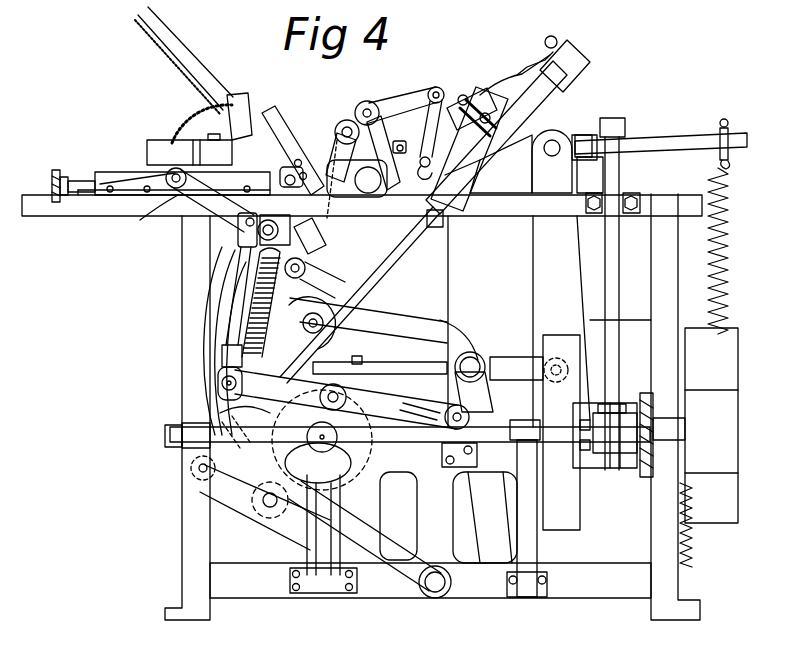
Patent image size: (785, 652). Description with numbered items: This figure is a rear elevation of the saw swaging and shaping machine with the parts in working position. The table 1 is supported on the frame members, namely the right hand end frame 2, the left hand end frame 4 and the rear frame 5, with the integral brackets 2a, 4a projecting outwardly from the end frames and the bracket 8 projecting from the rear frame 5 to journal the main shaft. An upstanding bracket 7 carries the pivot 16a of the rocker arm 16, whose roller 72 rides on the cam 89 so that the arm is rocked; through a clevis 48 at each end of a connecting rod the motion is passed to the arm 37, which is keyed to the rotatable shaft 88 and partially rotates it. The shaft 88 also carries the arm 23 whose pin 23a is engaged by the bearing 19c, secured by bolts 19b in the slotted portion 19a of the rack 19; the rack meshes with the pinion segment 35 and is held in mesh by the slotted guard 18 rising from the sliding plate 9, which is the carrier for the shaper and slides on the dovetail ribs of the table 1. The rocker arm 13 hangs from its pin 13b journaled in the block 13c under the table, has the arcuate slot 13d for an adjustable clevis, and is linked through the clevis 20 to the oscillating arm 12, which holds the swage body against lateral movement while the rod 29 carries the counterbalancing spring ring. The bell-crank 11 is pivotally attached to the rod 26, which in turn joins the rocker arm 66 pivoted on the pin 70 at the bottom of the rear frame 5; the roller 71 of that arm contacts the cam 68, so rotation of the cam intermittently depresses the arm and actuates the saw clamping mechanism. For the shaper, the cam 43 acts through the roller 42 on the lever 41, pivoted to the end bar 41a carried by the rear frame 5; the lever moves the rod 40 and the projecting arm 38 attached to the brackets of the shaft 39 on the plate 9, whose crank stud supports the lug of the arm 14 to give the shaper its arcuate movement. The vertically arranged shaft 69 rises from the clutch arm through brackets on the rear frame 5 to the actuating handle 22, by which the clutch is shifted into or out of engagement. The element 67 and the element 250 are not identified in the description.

The table 1 is at (686, 199).
The right hand end frame 2 is at (187, 378).
The integral bracket 2a is at (192, 512).
The left hand end frame 4 is at (668, 254).
The integral bracket 4a is at (662, 518).
The rear frame 5 is at (463, 92).
The upstanding bracket 7 is at (430, 535).
The bracket 8 is at (494, 508).
The sliding plate 9 is at (108, 178).
The bell-crank 11 is at (530, 110).
The oscillating arm 12 is at (535, 266).
The rocker arm 13 is at (254, 340).
The pin 13b is at (290, 215).
The block 13c is at (240, 250).
The arcuate slot 13d is at (247, 280).
The arm 14 is at (160, 145).
The rocker arm 16 is at (387, 306).
The pivot 16a is at (475, 360).
The guard 18 is at (293, 147).
The rack 19 is at (199, 56).
The slotted portion 19a is at (297, 160).
The bolts 19b is at (305, 170).
The bearing 19c is at (312, 222).
The clevis 20 is at (505, 360).
The actuating handle 22 is at (625, 124).
The arm 23 is at (332, 214).
The pin 23a is at (282, 170).
The rod 26 is at (405, 244).
The rod 29 is at (690, 143).
The pinion segment 35 is at (178, 124).
The arm 37 is at (382, 112).
The projecting extremity or arm 38 is at (233, 226).
The shaft 39 is at (140, 222).
The rod 40 is at (240, 307).
The lever 41 is at (233, 413).
The end bar 41a is at (480, 404).
The roller 42 is at (366, 380).
The cam 43 is at (407, 508).
The clevis 48 is at (332, 142).
The rocker arm 66 is at (365, 536).
The arm 67 is at (398, 142).
The cam 68 is at (358, 488).
The vertically arranged shaft 69 is at (615, 273).
The pin 70 is at (437, 597).
The roller 71 is at (258, 513).
The roller 72 is at (335, 332).
The rotatable shaft 88 is at (380, 198).
The cam 89 is at (362, 353).
The adjusting screw 250 is at (50, 180).